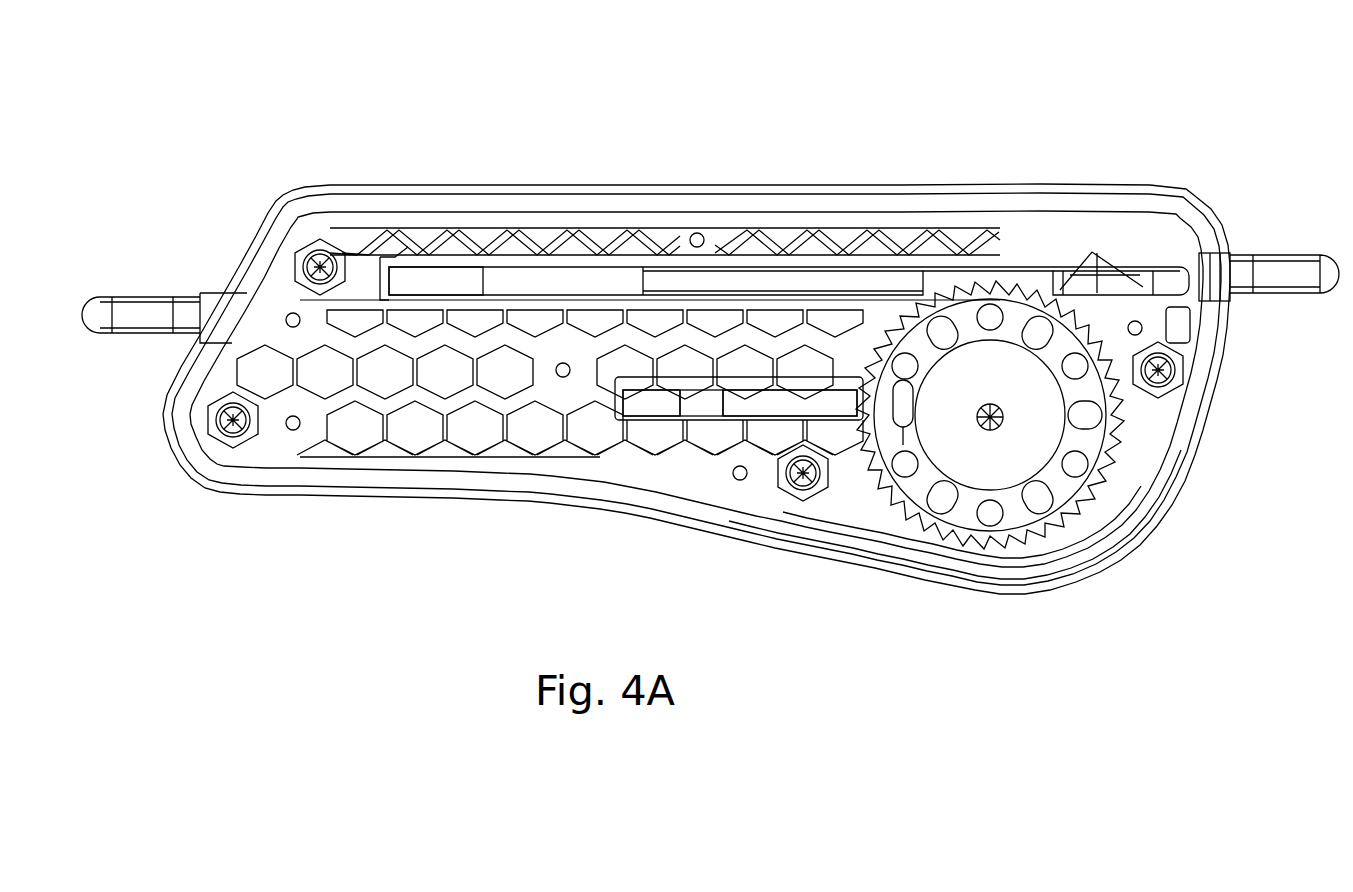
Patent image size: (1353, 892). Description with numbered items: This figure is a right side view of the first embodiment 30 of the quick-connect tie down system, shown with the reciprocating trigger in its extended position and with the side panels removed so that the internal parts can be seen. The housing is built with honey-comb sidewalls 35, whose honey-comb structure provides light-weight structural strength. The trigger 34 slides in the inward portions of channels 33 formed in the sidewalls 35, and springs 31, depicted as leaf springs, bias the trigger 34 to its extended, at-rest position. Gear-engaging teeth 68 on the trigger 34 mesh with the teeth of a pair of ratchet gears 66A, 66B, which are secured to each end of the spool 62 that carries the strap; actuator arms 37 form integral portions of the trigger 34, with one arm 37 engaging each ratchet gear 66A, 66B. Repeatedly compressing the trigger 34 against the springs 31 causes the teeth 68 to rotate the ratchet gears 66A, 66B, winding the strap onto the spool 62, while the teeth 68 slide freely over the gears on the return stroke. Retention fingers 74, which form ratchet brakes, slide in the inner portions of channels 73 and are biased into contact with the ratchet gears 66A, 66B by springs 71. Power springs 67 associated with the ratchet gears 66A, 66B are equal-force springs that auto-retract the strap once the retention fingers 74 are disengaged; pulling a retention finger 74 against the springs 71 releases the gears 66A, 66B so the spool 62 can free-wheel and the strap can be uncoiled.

The handle housing 30 is at (762, 183).
The springs 31 is at (543, 272).
The channels 33 is at (418, 274).
The trigger 34 is at (677, 272).
The honey-comb sidewalls 35 is at (308, 455).
The actuator arms 37 is at (1165, 269).
The spool 62 is at (1012, 480).
The ratchet gear 66A is at (1009, 483).
The ratchet gear 66B is at (1017, 533).
The power springs 67 is at (895, 427).
The gear-engaging teeth 68 is at (1100, 293).
The springs 71 is at (693, 410).
The channels 73 is at (640, 413).
The retention fingers 74 is at (793, 412).